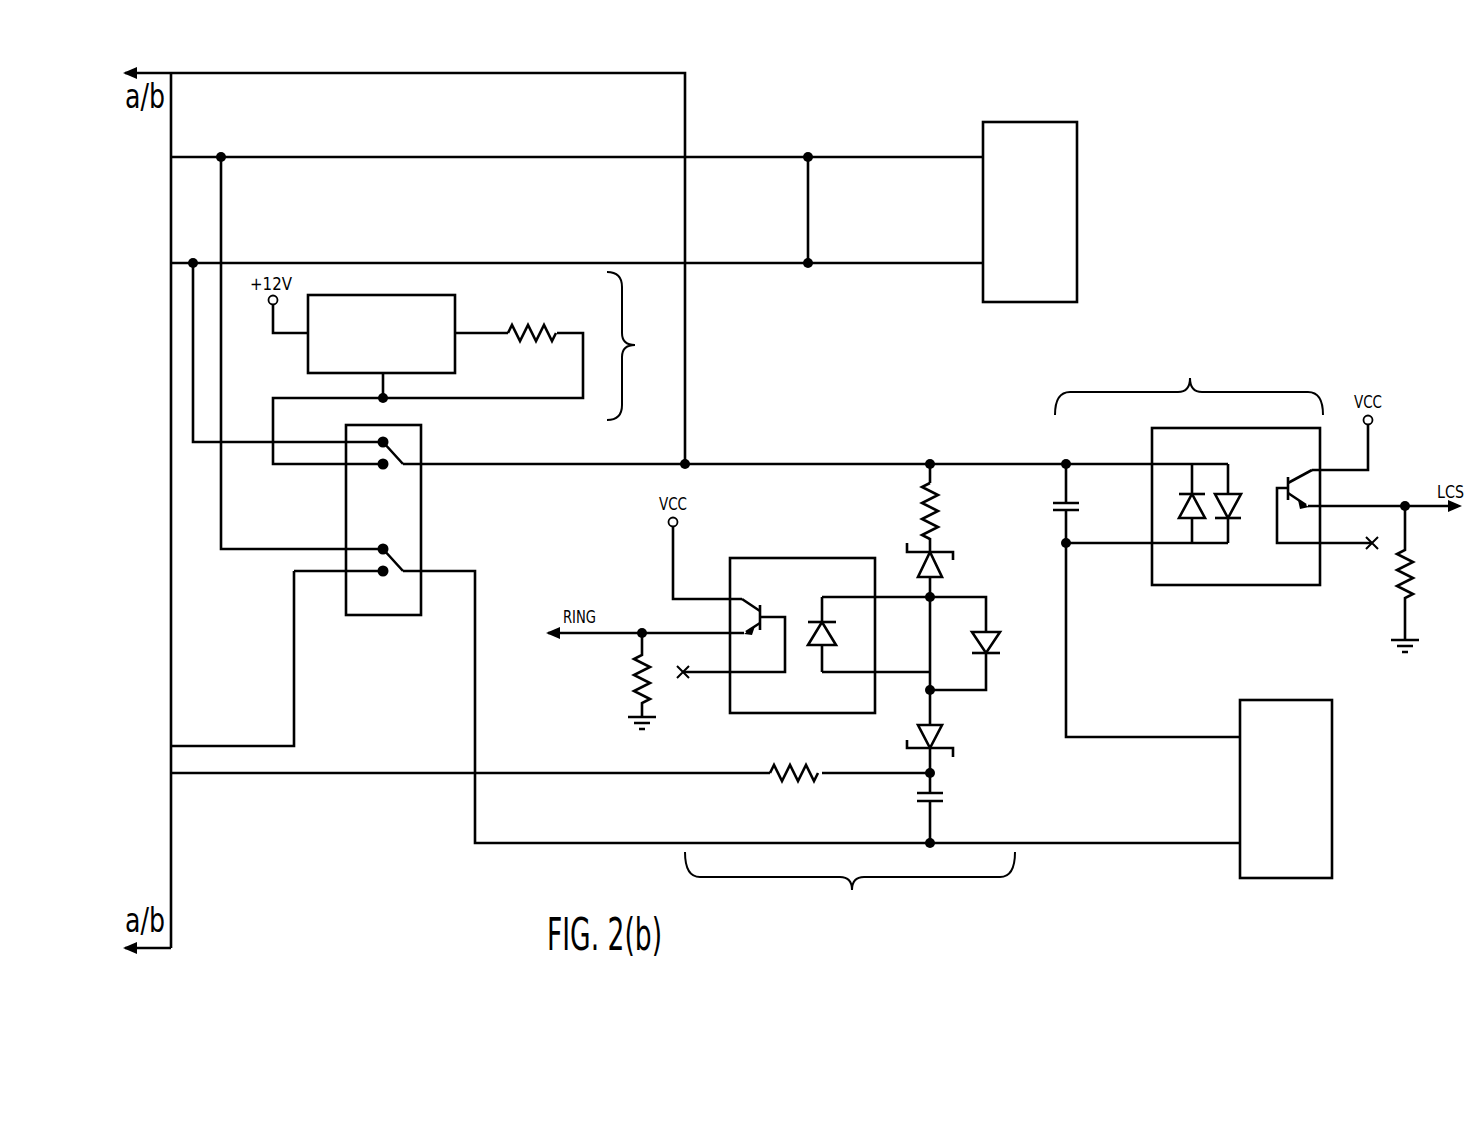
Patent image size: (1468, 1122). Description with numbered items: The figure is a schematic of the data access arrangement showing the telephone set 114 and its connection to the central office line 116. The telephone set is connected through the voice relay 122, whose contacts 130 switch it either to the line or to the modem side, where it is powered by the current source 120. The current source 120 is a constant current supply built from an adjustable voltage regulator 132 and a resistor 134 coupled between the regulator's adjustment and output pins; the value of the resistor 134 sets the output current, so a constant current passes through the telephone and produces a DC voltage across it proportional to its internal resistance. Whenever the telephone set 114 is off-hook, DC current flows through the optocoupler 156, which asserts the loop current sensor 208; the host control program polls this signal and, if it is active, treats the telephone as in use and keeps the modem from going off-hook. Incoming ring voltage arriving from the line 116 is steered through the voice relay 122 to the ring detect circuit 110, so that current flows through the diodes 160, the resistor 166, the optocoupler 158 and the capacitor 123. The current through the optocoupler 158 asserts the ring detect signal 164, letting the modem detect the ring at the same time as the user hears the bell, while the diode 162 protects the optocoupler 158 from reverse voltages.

The ring detect circuit 110 is at (850, 889).
The telephone set 114 is at (1287, 884).
The central office line 116 is at (1030, 308).
The current source 120 is at (490, 343).
The voice relay 122 is at (386, 652).
The capacitor 123 is at (952, 797).
The contacts 130 is at (430, 556).
The adjustable voltage regulator 132 is at (362, 292).
The resistor 134 is at (536, 315).
The optocoupler 156 is at (1215, 465).
The optocoupler 158 is at (716, 736).
The diodes 160 is at (962, 568).
The diode 162 is at (1005, 641).
The ring detect signal 164 is at (570, 643).
The resistor 166 is at (943, 510).
The loop current sensor 208 is at (1438, 522).